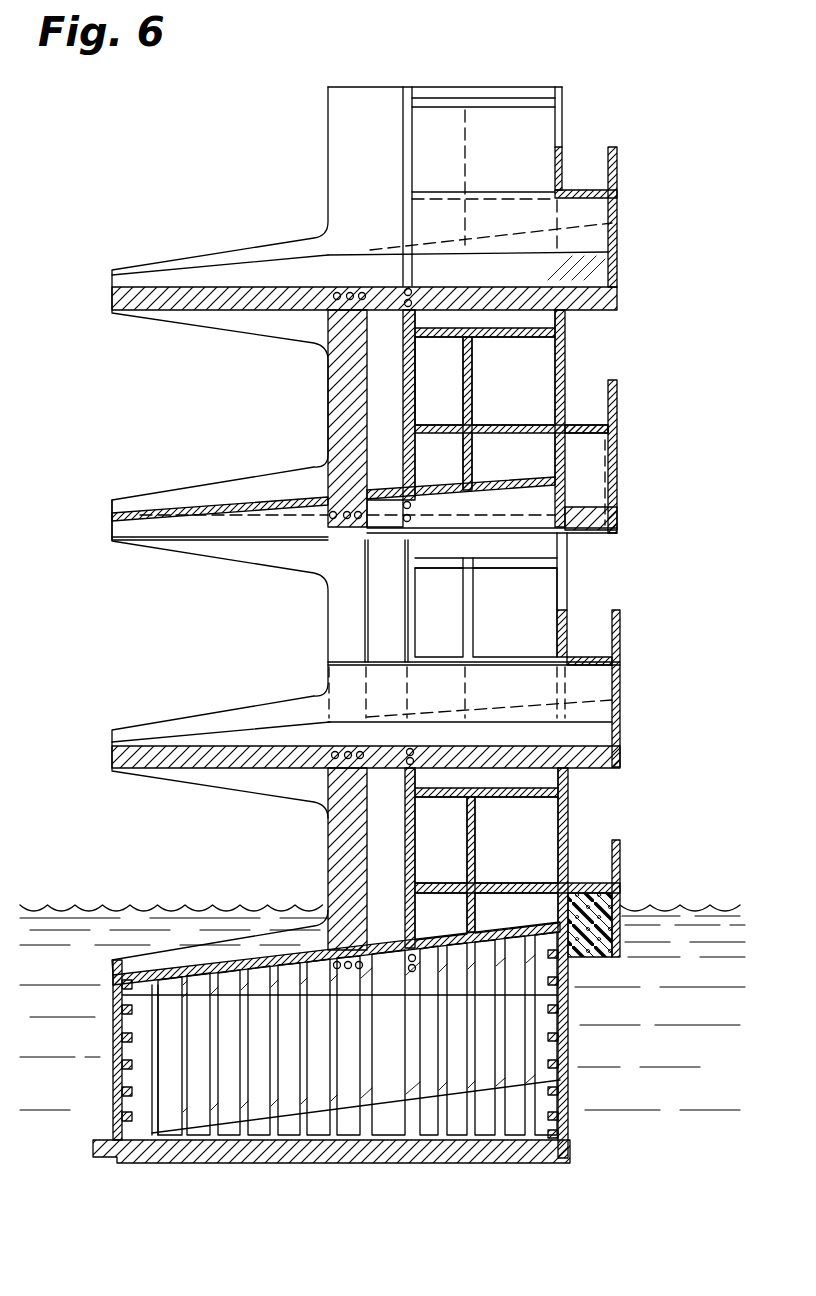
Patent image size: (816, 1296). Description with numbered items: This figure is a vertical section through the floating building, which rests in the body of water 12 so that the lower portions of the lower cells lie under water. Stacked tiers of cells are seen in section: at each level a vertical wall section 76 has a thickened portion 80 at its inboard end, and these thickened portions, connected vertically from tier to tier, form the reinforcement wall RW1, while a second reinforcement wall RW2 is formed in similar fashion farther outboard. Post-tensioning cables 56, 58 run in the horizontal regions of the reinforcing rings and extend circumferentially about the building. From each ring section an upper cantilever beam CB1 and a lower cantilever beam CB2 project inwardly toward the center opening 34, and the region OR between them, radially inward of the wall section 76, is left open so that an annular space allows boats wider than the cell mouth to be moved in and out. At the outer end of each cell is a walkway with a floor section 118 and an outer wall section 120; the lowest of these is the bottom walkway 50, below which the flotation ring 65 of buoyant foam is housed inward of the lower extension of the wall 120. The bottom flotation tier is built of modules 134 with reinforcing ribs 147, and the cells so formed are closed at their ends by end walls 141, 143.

The body of water 12 is at (67, 913).
The center opening 34 is at (57, 308).
The bottom walkway 50 is at (585, 150).
The post-tensioning cable 56 is at (362, 290).
The post-tensioning cable 58 is at (412, 303).
The flotation ring 65 is at (620, 897).
The vertical wall section 76 is at (323, 378).
The thickened portion of the vertical wall 80 is at (328, 150).
The floor section 118 is at (600, 208).
The outer wall section 120 is at (617, 155).
The module 134 is at (575, 1042).
The end wall 141 is at (113, 1080).
The end wall 143 is at (570, 1137).
The reinforcing rib 147 is at (183, 1033).
The cantilever beam CB1 is at (102, 310).
The lower cantilever beam CB2 is at (113, 515).
The open region OR is at (160, 420).
The reinforcement wall RW1 is at (325, 360).
The second reinforcement wall RW2 is at (420, 390).